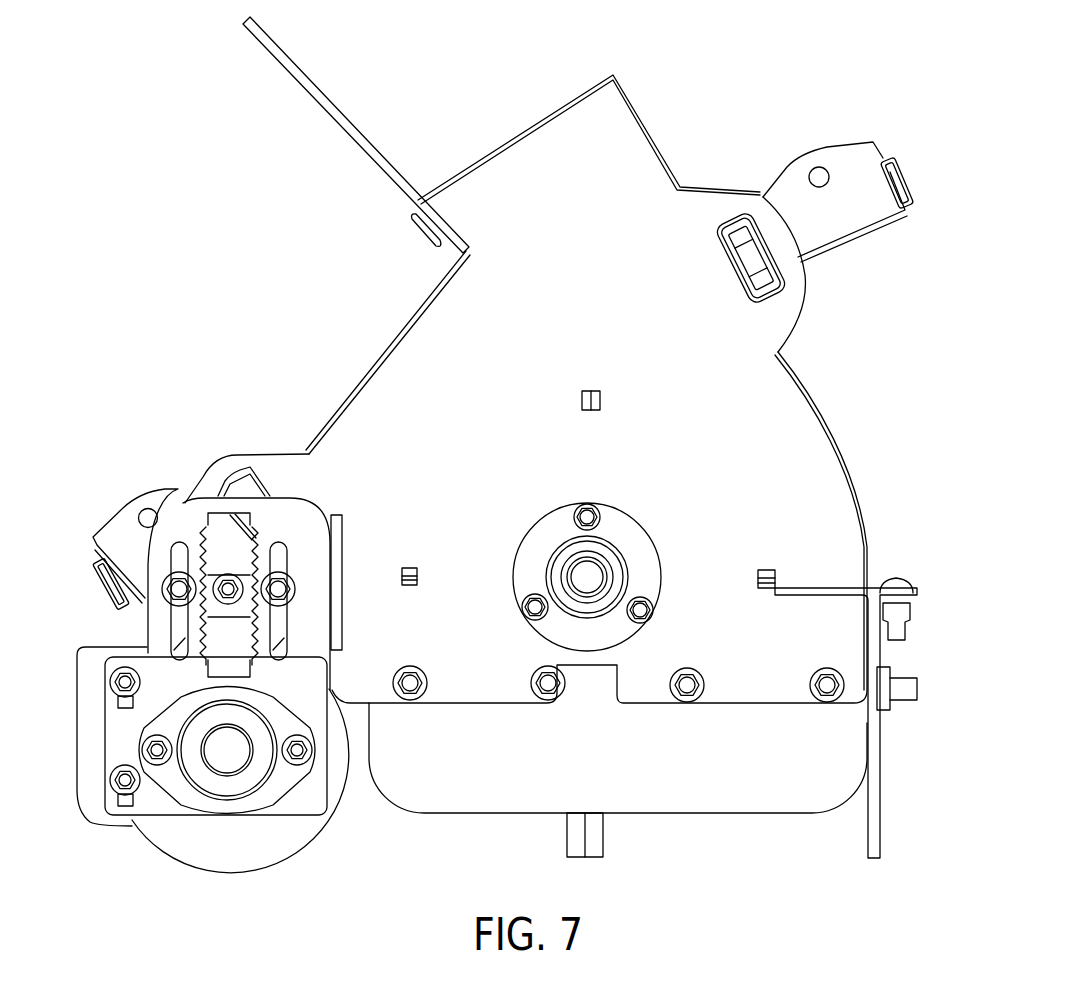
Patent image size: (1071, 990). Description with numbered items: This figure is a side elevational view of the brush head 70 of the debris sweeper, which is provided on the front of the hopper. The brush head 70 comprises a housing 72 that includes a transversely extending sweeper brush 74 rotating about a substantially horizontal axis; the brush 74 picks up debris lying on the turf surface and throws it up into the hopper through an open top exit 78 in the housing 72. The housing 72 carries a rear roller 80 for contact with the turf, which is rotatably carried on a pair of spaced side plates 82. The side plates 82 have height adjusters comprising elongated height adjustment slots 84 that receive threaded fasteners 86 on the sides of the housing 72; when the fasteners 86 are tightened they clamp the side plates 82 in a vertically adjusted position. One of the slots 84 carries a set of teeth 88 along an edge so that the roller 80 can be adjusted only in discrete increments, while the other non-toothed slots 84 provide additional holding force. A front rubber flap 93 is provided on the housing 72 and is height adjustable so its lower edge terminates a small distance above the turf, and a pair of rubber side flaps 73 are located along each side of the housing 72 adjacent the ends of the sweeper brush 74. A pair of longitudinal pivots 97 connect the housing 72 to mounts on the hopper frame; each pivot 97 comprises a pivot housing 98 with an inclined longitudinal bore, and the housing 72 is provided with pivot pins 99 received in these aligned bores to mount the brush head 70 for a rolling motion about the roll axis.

The brush head 70 is at (855, 340).
The housing 72 is at (740, 465).
The rubber side flaps 73 is at (708, 780).
The sweeper brush 74 is at (553, 834).
The open top exit 78 is at (480, 165).
The rear roller 80 is at (302, 818).
The side plates 82 is at (295, 505).
The height adjustment slots 84 is at (178, 543).
The threaded fasteners 86 is at (282, 592).
The teeth 88 is at (203, 543).
The front rubber flap 93 is at (880, 772).
The longitudinal pivots 97 is at (802, 128).
The pivot housing 98 is at (857, 163).
The pivot pins 99 is at (902, 167).